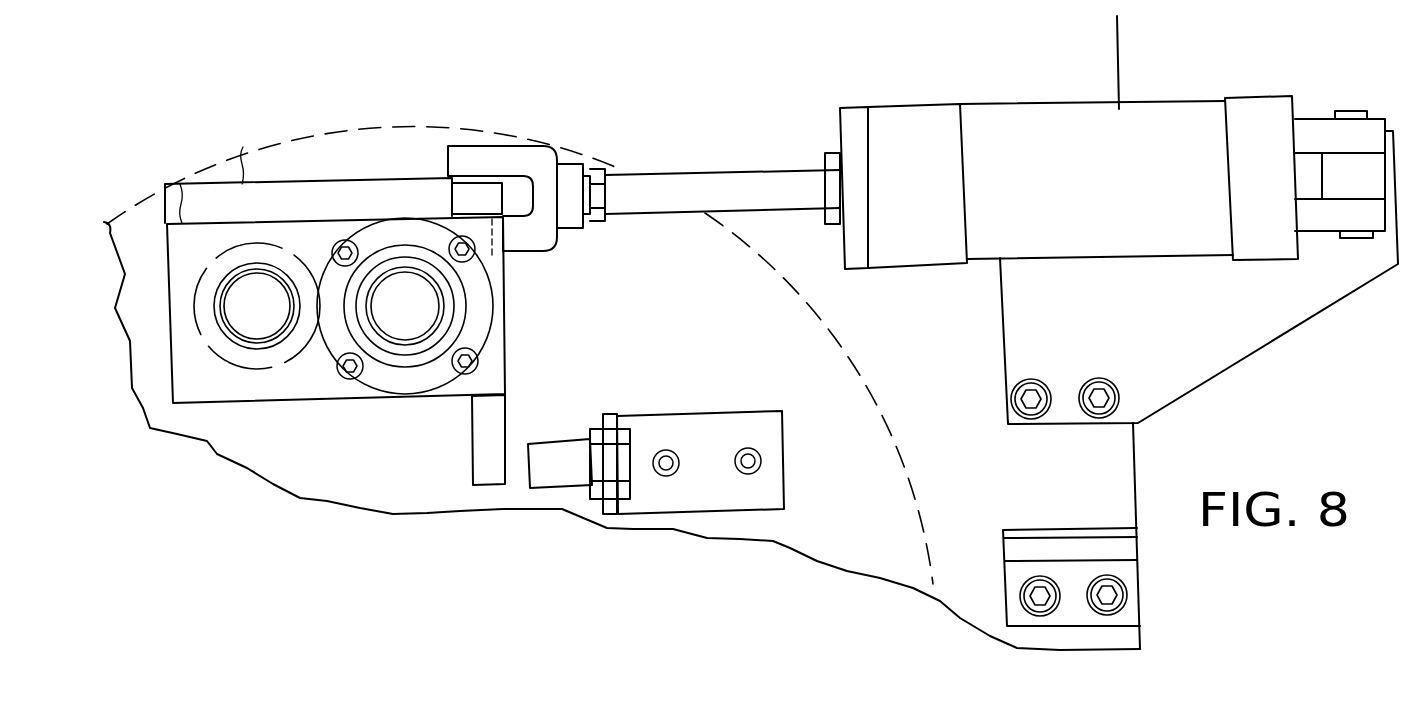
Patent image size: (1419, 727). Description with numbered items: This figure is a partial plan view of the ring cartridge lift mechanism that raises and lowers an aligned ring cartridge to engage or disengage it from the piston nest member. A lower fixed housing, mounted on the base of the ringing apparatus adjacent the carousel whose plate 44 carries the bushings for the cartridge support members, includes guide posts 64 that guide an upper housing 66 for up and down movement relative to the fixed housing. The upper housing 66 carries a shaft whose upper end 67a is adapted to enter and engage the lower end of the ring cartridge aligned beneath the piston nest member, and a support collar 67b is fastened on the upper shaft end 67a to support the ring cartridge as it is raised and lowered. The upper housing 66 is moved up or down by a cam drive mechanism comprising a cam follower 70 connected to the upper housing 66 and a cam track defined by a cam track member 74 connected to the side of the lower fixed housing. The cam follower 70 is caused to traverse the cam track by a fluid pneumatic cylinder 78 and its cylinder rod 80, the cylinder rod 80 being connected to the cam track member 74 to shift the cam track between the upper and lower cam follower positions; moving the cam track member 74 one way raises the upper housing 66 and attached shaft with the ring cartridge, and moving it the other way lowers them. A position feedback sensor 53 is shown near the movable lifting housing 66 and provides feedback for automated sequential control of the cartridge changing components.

The plate 44 is at (853, 350).
The sensor assembly 53 is at (556, 480).
The guide posts 64 is at (233, 325).
The upper housing 66 is at (180, 183).
The upper end of shaft 67a is at (393, 330).
The support collar 67b is at (340, 240).
The cam follower 70 is at (441, 178).
The cam track member 74 is at (243, 146).
The fluid (pneumatic) cylinder 78 is at (1005, 104).
The cylinder rod 80 is at (760, 166).